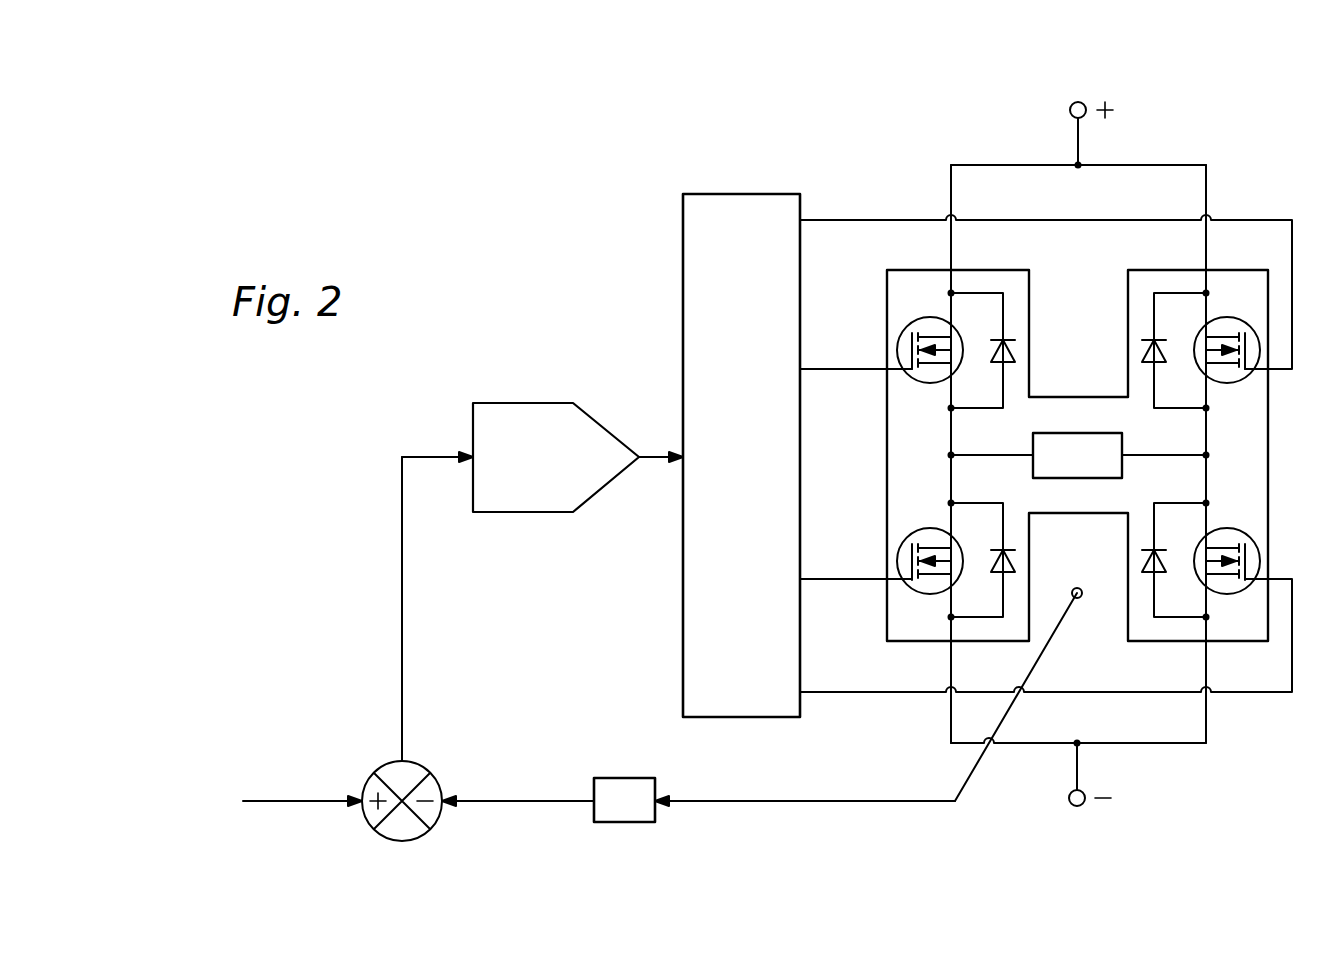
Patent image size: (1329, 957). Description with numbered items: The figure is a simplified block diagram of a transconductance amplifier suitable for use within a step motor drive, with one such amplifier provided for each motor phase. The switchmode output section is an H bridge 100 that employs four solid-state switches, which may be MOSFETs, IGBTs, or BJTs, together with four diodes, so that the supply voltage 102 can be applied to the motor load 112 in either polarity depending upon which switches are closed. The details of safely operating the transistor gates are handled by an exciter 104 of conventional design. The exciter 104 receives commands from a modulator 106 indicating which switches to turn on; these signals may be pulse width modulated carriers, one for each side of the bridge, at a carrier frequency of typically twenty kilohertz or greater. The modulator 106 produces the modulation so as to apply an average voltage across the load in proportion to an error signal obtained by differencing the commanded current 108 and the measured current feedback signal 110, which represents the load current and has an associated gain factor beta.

The H bridge 100 is at (1003, 138).
The supply voltage 102 is at (1094, 78).
The exciter 104 is at (718, 168).
The modulator 106 is at (514, 376).
The commanded current 108 is at (305, 827).
The current feedback signal 110 is at (880, 822).
The motor load 112 is at (1069, 376).